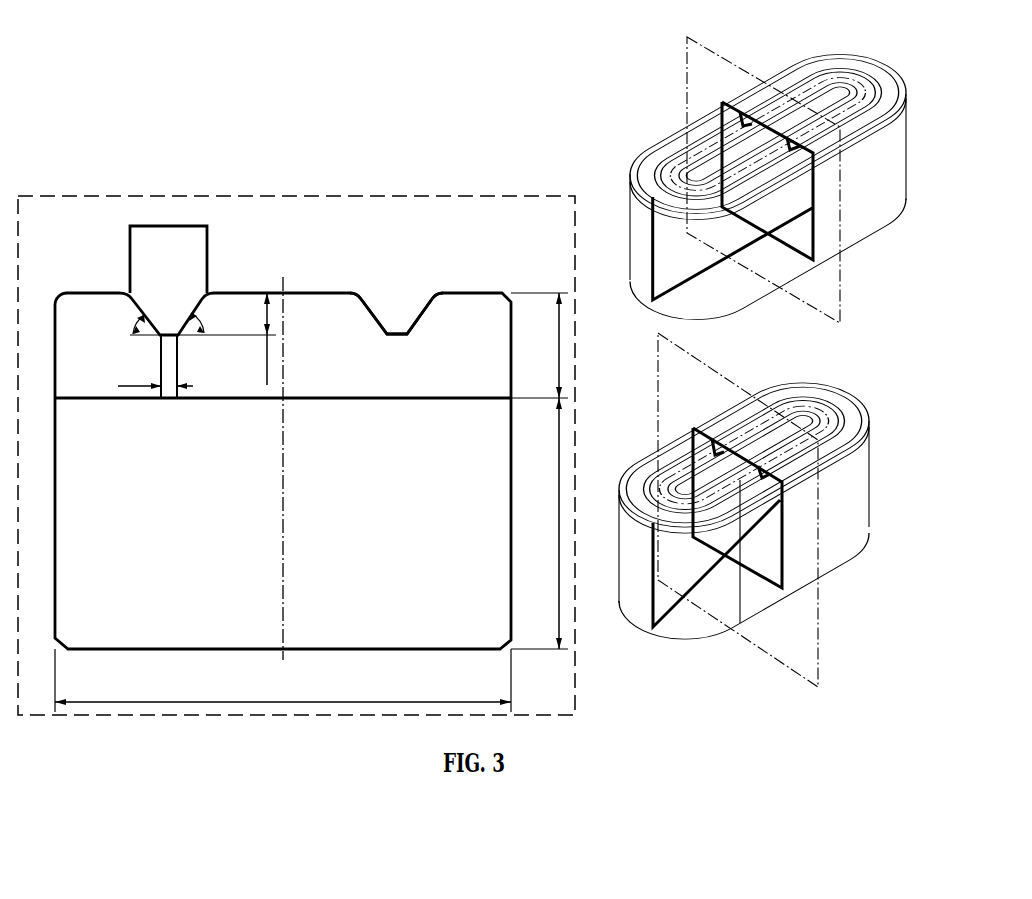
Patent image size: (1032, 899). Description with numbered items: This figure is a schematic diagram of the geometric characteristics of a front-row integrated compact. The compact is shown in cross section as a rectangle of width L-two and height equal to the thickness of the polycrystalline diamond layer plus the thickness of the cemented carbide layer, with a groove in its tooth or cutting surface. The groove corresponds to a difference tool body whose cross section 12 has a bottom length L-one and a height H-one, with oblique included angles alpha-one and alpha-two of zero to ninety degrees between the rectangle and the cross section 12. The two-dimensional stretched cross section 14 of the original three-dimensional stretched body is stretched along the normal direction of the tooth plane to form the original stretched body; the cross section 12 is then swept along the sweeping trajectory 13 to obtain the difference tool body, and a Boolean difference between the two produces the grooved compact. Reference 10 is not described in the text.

The die 10 is at (283, 277).
The cross section of the difference tool body 12 is at (130, 226).
The sweeping trajectory 13 is at (398, 293).
The two-dimensional stretched cross section 14 is at (140, 197).